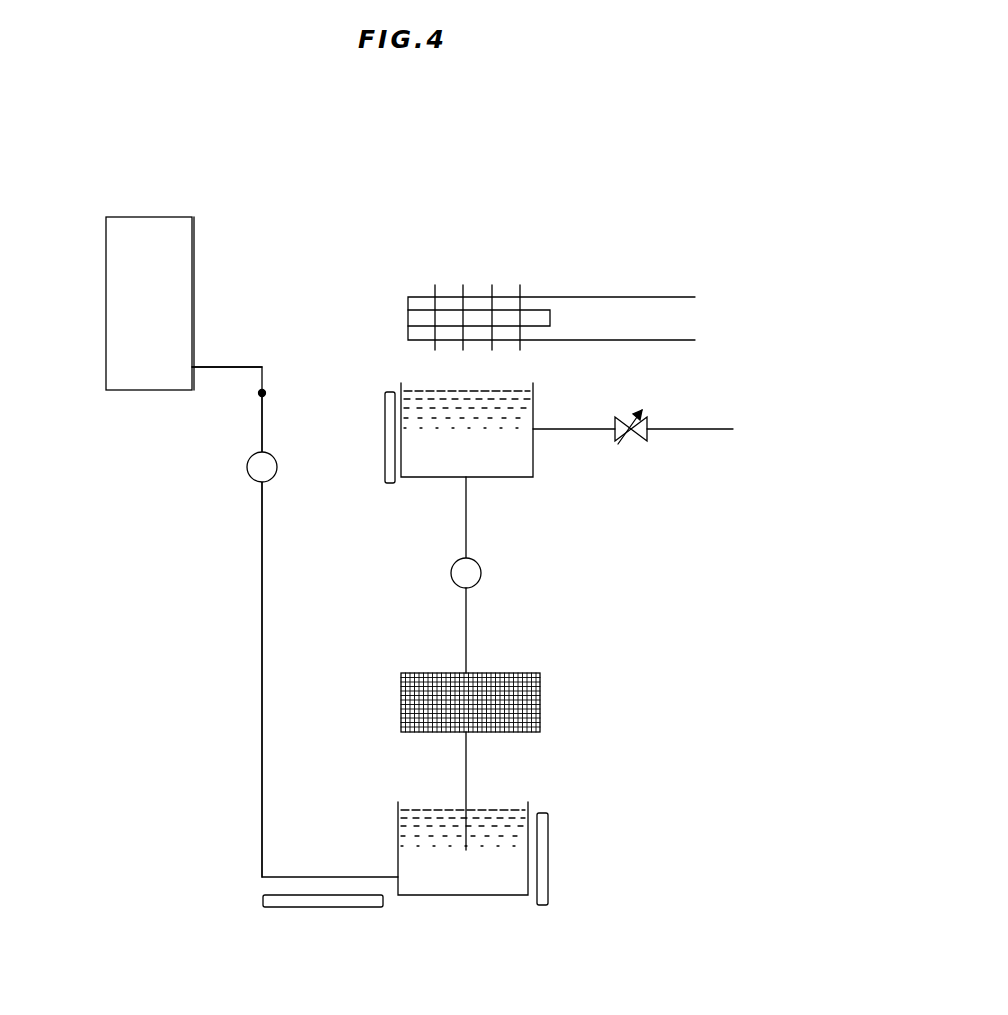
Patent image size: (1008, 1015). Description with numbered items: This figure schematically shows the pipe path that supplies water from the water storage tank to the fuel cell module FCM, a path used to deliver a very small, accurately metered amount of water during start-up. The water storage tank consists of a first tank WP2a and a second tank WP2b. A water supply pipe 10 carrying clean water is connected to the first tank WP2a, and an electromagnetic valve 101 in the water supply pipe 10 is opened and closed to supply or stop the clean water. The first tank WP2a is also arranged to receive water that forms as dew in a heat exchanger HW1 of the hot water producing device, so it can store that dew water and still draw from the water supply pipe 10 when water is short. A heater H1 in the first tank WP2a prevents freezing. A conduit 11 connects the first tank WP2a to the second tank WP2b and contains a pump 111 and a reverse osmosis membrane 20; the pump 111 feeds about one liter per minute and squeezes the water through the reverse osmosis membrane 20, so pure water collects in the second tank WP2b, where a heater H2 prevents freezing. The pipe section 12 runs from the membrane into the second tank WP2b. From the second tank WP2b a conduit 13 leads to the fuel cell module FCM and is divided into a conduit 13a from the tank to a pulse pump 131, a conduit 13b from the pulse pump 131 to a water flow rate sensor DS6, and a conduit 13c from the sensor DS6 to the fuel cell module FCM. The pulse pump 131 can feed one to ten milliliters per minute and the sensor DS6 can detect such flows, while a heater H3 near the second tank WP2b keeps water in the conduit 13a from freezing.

The fuel cell module FCM is at (150, 200).
The conduit 13 is at (165, 410).
The conduit 13a is at (257, 508).
The conduit 13b is at (257, 428).
The conduit 13c is at (222, 368).
The water flow rate sensor DS6 is at (266, 393).
The pulse pump 131 is at (277, 466).
The heat exchanger HW1 is at (585, 265).
The first tank WP2a is at (533, 445).
The heater H1 is at (389, 484).
The water supply pipe 10 is at (695, 429).
The electromagnetic valve 101 is at (628, 422).
The conduit 11 is at (466, 532).
The pump 111 is at (481, 568).
The reverse osmosis membrane 20 is at (540, 700).
The pipe 12 is at (468, 750).
The second tank WP2b is at (500, 898).
The heater H2 is at (548, 870).
The heater H3 is at (345, 910).